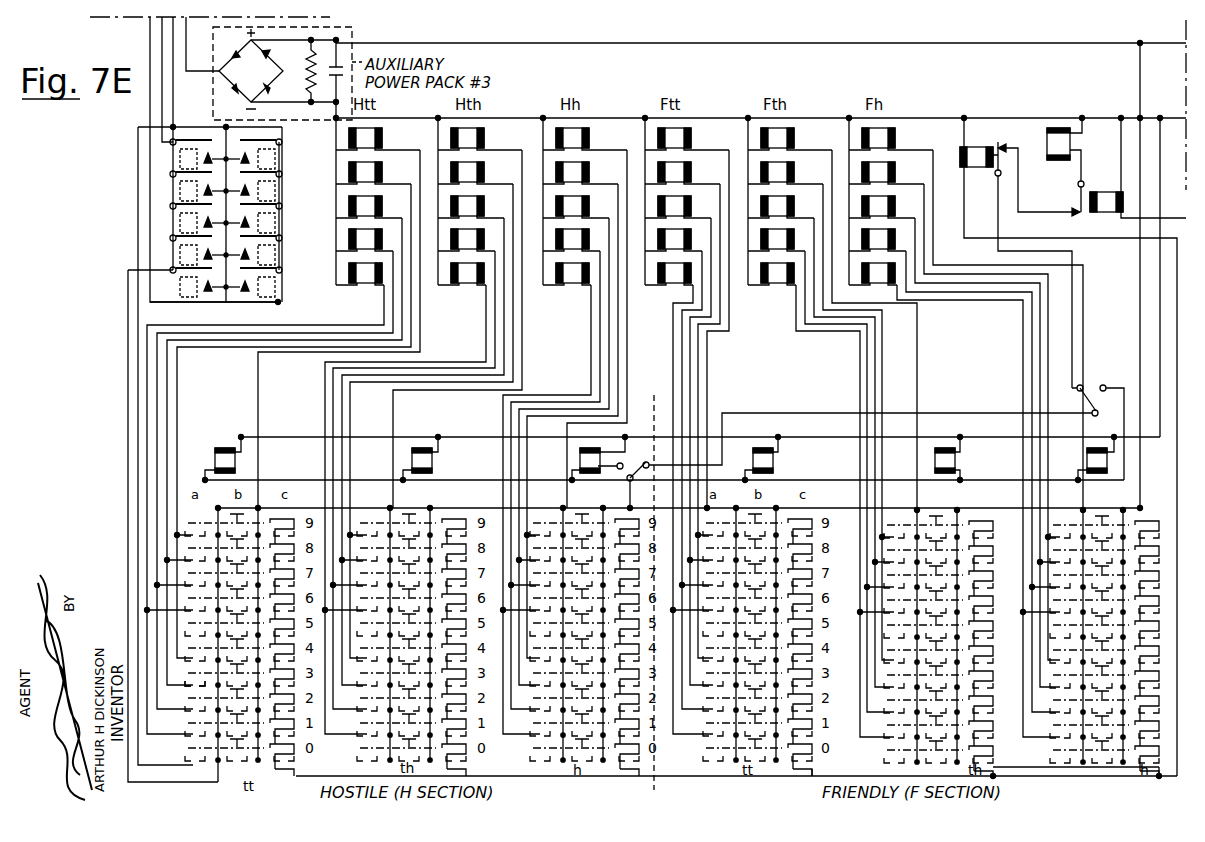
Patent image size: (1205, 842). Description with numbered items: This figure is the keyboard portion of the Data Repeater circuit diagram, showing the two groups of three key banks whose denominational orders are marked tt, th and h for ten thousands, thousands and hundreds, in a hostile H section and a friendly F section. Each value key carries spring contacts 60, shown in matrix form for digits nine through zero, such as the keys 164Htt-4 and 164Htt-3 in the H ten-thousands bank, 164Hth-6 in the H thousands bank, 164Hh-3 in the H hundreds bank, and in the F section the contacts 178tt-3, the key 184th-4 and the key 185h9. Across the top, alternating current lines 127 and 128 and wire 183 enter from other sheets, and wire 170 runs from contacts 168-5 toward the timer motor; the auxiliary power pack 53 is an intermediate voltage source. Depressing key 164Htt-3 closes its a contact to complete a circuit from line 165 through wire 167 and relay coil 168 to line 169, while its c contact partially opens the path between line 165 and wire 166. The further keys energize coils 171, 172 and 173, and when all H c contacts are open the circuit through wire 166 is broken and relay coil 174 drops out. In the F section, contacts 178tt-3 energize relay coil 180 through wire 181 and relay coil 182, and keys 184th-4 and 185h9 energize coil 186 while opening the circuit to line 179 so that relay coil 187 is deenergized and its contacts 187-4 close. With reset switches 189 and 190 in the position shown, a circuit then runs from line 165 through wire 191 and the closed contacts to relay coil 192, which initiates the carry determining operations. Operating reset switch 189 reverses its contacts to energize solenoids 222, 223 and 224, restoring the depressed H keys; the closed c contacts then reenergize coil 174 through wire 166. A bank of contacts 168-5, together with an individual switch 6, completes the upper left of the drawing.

The wire 183 is at (150, 33).
The line 127 is at (186, 47).
The line 128 is at (175, 78).
The wire 170 is at (162, 110).
The auxiliary power pack 53 is at (352, 32).
The switch 6 is at (270, 139).
The relay coil 182 is at (278, 158).
The contacts 168-5 is at (180, 204).
The relay coil 168 is at (349, 203).
The line 169 is at (336, 206).
The relay coil 173 is at (483, 142).
The relay coil 171 is at (468, 280).
The relay coil 172 is at (576, 201).
The relay coil 180 is at (672, 277).
The relay coil 186 is at (786, 141).
The relay coil 187 is at (968, 160).
The contacts 187-4 is at (1018, 160).
The relay coil 192 is at (1070, 145).
The relay coil 174 is at (1115, 212).
The wire 191 is at (1072, 326).
The reset switch 190 is at (1094, 380).
The reset switch 189 is at (637, 458).
The wire 181 is at (673, 361).
The solenoid 222 is at (220, 450).
The solenoid 223 is at (432, 461).
The solenoid 224 is at (580, 459).
The wire 167 is at (167, 484).
The line 165 is at (400, 509).
The wire 166 is at (310, 776).
The value key 185h9 is at (1110, 525).
The value key 164Htt-4 is at (193, 647).
The value key 164Htt-3 is at (190, 672).
The value key 164Hth-6 is at (458, 598).
The value key 164Hh-3 is at (600, 665).
The value key contacts 178tt-3 is at (770, 665).
The value key 184th-4 is at (940, 652).
The line 179 is at (800, 766).
The spring contacts 60 is at (1100, 770).